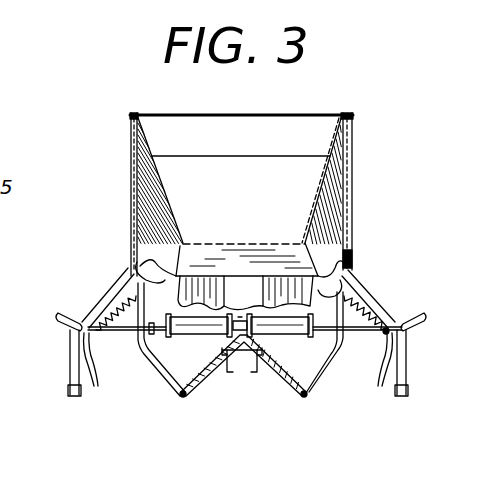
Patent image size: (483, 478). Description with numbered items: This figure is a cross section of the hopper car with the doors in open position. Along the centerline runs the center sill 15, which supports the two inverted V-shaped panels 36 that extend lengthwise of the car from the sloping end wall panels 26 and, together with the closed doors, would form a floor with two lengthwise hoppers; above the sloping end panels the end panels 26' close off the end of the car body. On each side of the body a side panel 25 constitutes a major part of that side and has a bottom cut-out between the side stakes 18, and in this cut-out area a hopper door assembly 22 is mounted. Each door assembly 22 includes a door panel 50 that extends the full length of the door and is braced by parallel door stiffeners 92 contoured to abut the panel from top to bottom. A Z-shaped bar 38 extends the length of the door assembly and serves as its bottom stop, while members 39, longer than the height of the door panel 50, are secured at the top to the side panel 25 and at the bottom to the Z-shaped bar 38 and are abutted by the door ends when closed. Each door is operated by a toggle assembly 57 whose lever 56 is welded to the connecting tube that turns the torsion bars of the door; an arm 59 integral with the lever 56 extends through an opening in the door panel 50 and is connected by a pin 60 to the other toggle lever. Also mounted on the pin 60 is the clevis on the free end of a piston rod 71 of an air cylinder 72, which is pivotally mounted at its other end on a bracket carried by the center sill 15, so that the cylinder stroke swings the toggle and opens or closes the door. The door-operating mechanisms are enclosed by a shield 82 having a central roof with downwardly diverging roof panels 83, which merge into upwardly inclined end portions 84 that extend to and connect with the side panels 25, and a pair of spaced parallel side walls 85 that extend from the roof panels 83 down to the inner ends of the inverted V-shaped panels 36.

The center sill 15 is at (253, 375).
The side stake 18 is at (353, 153).
The hopper door assembly 22 is at (67, 401).
The side panel 25 is at (346, 180).
The sloping end wall panel 26 is at (241, 175).
The end panel 26' is at (241, 194).
The inverted V-shaped panel 36 is at (216, 372).
The Z-shaped bar 38 is at (180, 398).
The member 39 is at (152, 373).
The door panel 50 is at (408, 346).
The lever 56 is at (96, 380).
The toggle assembly 57 is at (383, 336).
The arm 59 is at (66, 314).
The pin 60 is at (90, 334).
The piston rod 71 is at (152, 324).
The air cylinder 72 is at (212, 336).
The shield 82 is at (232, 243).
The roof panel 83 is at (276, 252).
The upwardly inclined end portion 84 is at (160, 198).
The side wall 85 is at (210, 284).
The door stiffener 92 is at (72, 356).